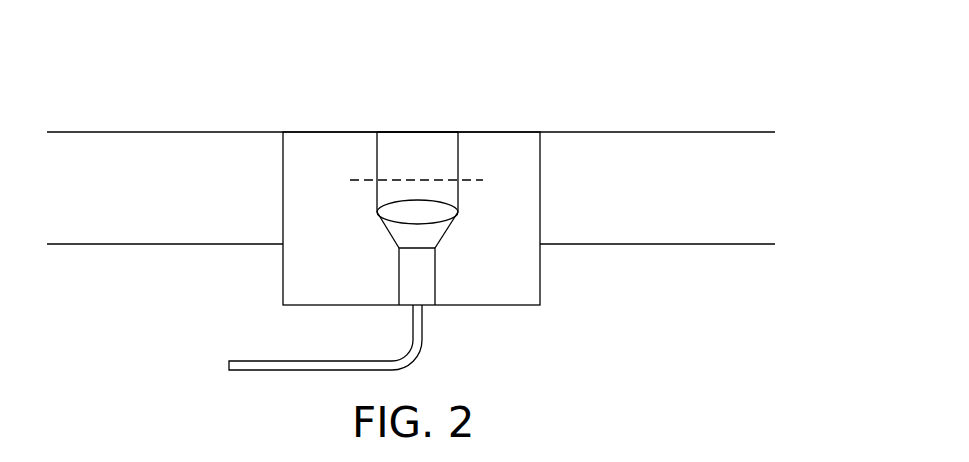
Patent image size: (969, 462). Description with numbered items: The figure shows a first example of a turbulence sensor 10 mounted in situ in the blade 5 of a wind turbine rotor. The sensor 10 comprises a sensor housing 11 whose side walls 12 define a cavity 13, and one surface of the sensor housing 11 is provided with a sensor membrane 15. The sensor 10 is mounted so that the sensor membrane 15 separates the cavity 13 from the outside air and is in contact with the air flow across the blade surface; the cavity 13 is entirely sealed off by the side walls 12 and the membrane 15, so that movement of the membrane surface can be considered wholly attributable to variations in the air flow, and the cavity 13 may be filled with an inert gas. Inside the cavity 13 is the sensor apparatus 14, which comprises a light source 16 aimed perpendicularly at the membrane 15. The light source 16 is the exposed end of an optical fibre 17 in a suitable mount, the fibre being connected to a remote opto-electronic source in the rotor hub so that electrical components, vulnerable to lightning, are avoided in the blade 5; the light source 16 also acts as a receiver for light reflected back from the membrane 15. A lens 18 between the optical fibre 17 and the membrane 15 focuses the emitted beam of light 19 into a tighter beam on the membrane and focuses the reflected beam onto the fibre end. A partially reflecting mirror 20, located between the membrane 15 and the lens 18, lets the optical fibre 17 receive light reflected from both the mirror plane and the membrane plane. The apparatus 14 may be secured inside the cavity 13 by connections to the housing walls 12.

The blade 5 is at (723, 143).
The sensor 10 is at (275, 80).
The sensor housing 11 is at (278, 316).
The side walls 12 is at (541, 291).
The cavity 13 is at (521, 227).
The sensor apparatus 14 is at (356, 224).
The sensor membrane 15 is at (517, 131).
The light source 16 is at (435, 277).
The optical fibre 17 is at (423, 329).
The lens 18 is at (386, 227).
The beam of light 19 is at (458, 158).
The partially reflecting mirror 20 is at (362, 178).